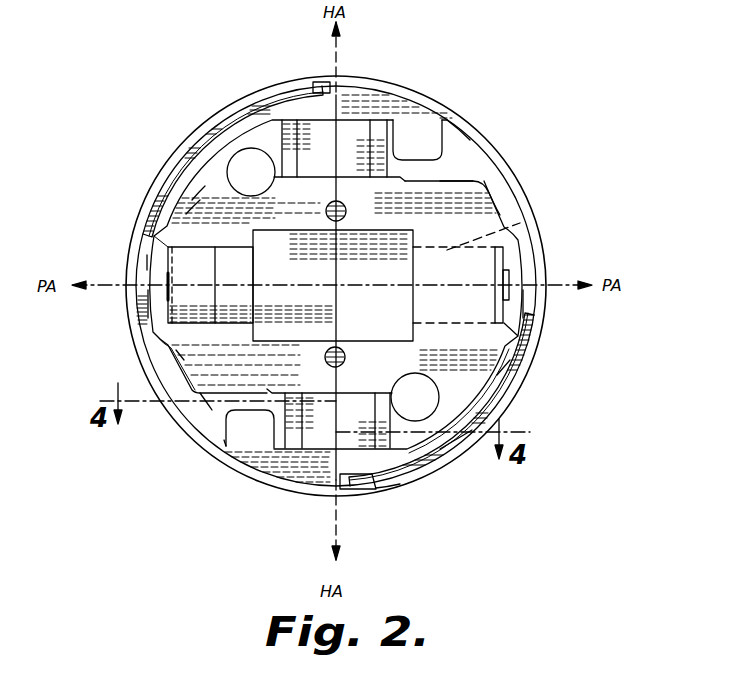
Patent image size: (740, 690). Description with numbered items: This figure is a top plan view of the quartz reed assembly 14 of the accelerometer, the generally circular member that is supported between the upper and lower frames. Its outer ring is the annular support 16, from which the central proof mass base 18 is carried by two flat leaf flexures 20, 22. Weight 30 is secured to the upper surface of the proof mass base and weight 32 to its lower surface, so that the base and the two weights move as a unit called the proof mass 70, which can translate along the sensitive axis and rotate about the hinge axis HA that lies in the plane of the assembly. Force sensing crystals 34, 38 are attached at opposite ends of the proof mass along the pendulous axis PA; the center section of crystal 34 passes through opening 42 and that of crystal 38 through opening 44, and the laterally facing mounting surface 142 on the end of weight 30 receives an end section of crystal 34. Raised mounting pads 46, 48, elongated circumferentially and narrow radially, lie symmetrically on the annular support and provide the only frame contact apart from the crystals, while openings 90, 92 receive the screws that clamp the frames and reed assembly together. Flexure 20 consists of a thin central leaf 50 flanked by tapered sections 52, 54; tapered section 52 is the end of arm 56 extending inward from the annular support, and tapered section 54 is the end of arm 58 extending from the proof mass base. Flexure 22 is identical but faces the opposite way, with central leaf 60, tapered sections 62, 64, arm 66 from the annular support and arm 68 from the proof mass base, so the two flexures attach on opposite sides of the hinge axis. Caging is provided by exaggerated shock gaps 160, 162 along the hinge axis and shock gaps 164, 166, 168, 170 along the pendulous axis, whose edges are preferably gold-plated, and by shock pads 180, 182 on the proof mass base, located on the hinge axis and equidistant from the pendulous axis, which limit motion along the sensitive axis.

The reed assembly 14 is at (502, 144).
The annular support 16 is at (525, 228).
The proof mass base 18 is at (418, 392).
The flexure 20 is at (290, 438).
The flexure 22 is at (356, 120).
The weight 30 is at (378, 281).
The weight 32 is at (520, 223).
The force sensing crystal 34 is at (163, 294).
The force sensing crystal 38 is at (517, 294).
The opening 42 is at (160, 270).
The opening 44 is at (510, 267).
The mounting pad 46 is at (226, 126).
The mounting pad 48 is at (508, 371).
The central leaf 50 is at (312, 448).
The tapered section 52 is at (280, 445).
The tapered section 54 is at (388, 486).
The arm 56 is at (250, 409).
The arm 58 is at (455, 465).
The central leaf 60 is at (323, 118).
The tapered section 62 is at (422, 167).
The tapered section 64 is at (290, 130).
The arm 66 is at (462, 126).
The arm 68 is at (240, 166).
The proof mass 70 is at (178, 205).
The opening 90 is at (212, 128).
The opening 92 is at (470, 366).
The mounting surface 142 is at (150, 262).
The shock gap 160 is at (462, 171).
The shock gap 162 is at (210, 394).
The shock gap 164 is at (192, 200).
The shock gap 166 is at (182, 352).
The shock gap 168 is at (490, 198).
The shock gap 170 is at (505, 382).
The shock pad 180 is at (344, 203).
The shock pad 182 is at (342, 362).